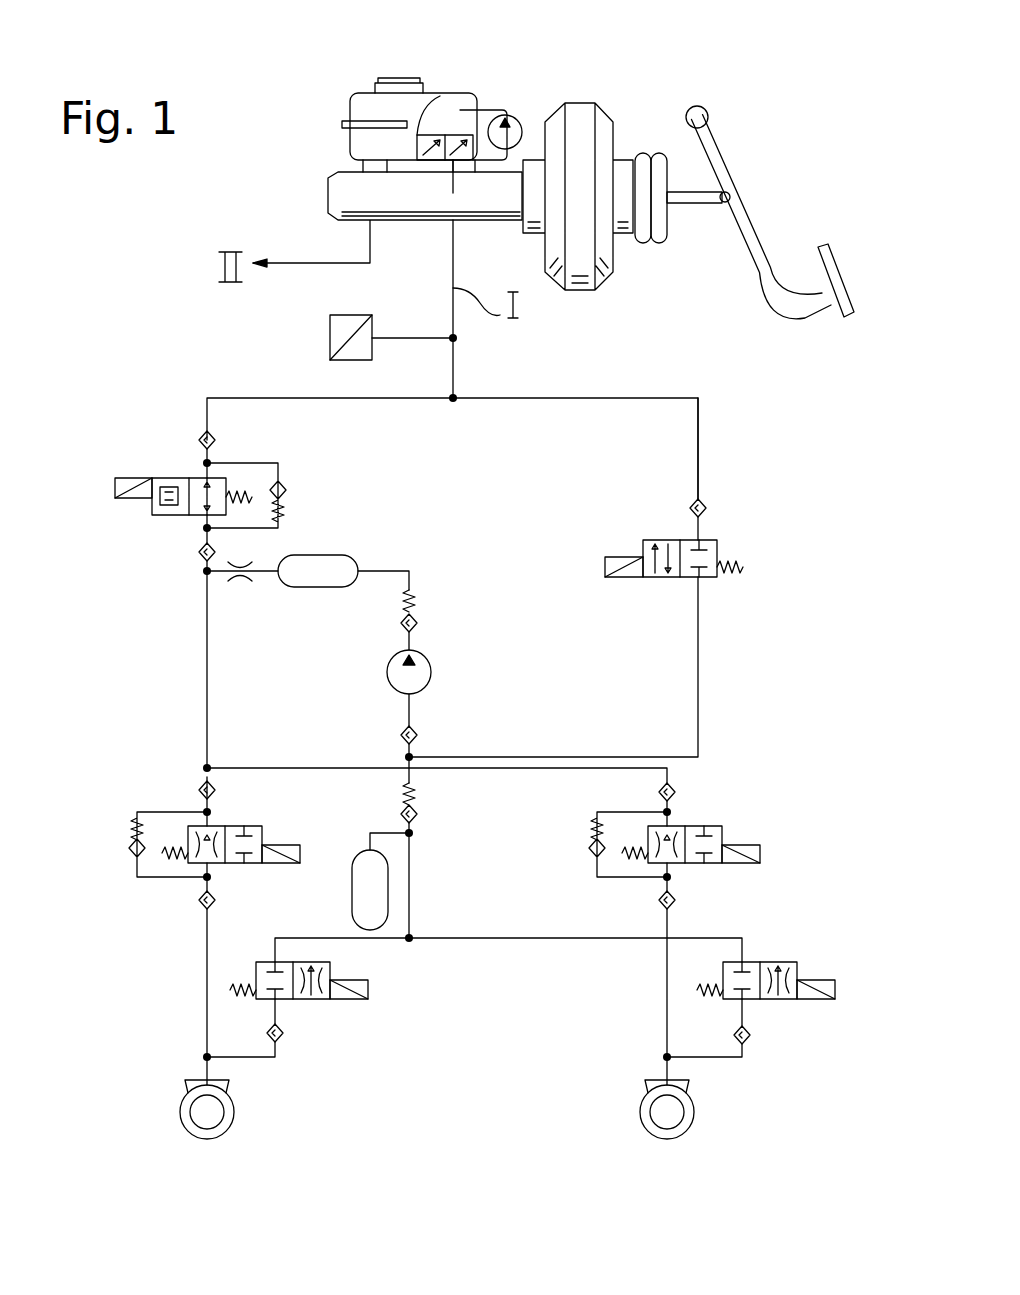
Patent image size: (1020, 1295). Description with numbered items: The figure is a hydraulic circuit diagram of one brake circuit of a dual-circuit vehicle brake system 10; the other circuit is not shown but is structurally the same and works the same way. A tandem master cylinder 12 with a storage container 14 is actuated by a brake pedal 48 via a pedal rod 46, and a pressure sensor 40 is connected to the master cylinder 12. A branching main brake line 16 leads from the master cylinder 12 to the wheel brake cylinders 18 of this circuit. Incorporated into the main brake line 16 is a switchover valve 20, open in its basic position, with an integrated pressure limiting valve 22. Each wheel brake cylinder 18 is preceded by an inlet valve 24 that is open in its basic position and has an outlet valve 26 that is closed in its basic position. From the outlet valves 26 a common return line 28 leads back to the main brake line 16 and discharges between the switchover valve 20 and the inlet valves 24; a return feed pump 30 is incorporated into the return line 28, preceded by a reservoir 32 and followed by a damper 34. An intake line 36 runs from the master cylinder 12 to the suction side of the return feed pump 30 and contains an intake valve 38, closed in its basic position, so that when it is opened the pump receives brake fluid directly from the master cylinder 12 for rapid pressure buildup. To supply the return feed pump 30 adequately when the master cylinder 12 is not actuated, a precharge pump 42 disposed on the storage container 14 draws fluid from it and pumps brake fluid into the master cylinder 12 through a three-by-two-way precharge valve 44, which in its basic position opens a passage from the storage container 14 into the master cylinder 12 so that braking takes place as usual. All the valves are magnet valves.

The vehicle brake system 10 is at (755, 370).
The tandem master cylinder 12 is at (352, 193).
The storage container 14 is at (365, 105).
The main brake line 16 is at (348, 400).
The wheel brake cylinders 18 is at (215, 1080).
The switchover valve 20 is at (198, 500).
The pressure limiting valve 22 is at (153, 512).
The inlet valves 24 is at (253, 840).
The outlet valves 26 is at (282, 982).
The return line 28 is at (415, 712).
The return feed pump 30 is at (418, 683).
The reservoir 32 is at (368, 915).
The damper 34 is at (312, 572).
The intake line 36 is at (698, 458).
The intake valve 38 is at (710, 560).
The pressure sensor 40 is at (330, 352).
The precharge pump 42 is at (512, 125).
The precharge valve 44 is at (440, 112).
The pedal rod 46 is at (692, 182).
The brake pedal 48 is at (720, 148).